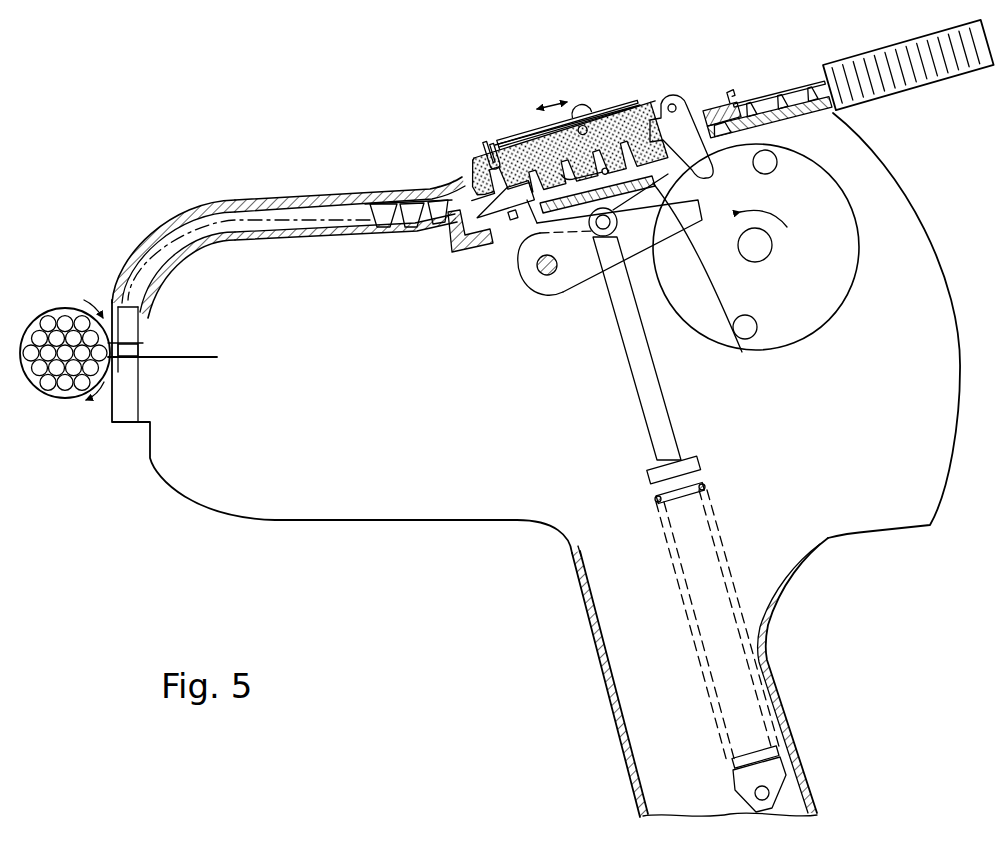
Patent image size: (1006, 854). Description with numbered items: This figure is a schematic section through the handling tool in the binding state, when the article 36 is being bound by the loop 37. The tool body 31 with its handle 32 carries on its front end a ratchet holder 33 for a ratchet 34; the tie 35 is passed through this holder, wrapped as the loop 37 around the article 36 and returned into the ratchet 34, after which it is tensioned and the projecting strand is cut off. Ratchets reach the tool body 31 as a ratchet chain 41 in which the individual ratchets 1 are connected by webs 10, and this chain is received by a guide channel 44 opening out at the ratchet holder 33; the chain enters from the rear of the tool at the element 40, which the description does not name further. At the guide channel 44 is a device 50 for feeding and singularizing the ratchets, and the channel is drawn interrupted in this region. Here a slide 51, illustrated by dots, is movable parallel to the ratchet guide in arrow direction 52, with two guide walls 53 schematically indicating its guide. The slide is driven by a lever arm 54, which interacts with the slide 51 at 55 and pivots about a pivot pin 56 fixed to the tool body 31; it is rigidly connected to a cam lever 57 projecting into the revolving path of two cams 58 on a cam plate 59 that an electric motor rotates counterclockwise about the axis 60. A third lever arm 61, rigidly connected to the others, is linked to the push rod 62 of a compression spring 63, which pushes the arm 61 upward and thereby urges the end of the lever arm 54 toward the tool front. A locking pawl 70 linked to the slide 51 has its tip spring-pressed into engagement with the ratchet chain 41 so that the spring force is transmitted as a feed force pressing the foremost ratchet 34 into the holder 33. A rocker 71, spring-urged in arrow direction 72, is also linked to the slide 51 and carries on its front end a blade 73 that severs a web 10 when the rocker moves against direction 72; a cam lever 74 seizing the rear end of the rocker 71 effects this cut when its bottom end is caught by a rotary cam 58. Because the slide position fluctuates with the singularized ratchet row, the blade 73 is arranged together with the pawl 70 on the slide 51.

The ratchet 1 is at (417, 208).
The web 10 is at (743, 100).
The tool body 31 is at (287, 495).
The handle 32 is at (607, 677).
The ratchet holder 33 is at (133, 367).
The ratchet 34 is at (140, 348).
The tie 35 is at (200, 360).
The article 36 is at (65, 387).
The loop 37 is at (57, 310).
The grip 40 is at (933, 73).
The ratchet chain 41 is at (778, 92).
The guide channel 44 is at (262, 235).
The device for feeding and singularizing the ratchets 50 is at (497, 78).
The slide 51 is at (637, 120).
The arrow direction 52 is at (555, 102).
The guide walls 53 is at (624, 127).
The lever arm 54 is at (520, 236).
The interaction point 55 is at (513, 218).
The pivot pin 56 is at (548, 276).
The cam lever 57 is at (694, 222).
The cams 58 is at (767, 160).
The cam plate 59 is at (810, 198).
The axis 60 is at (765, 246).
The third lever arm 61 is at (592, 242).
The push rod 62 is at (640, 373).
The compression spring 63 is at (653, 493).
The locking pawl 70 is at (545, 140).
The rocker 71 is at (522, 143).
The arrow direction 72 is at (583, 110).
The blade 73 is at (490, 167).
The cam lever 74 is at (682, 118).